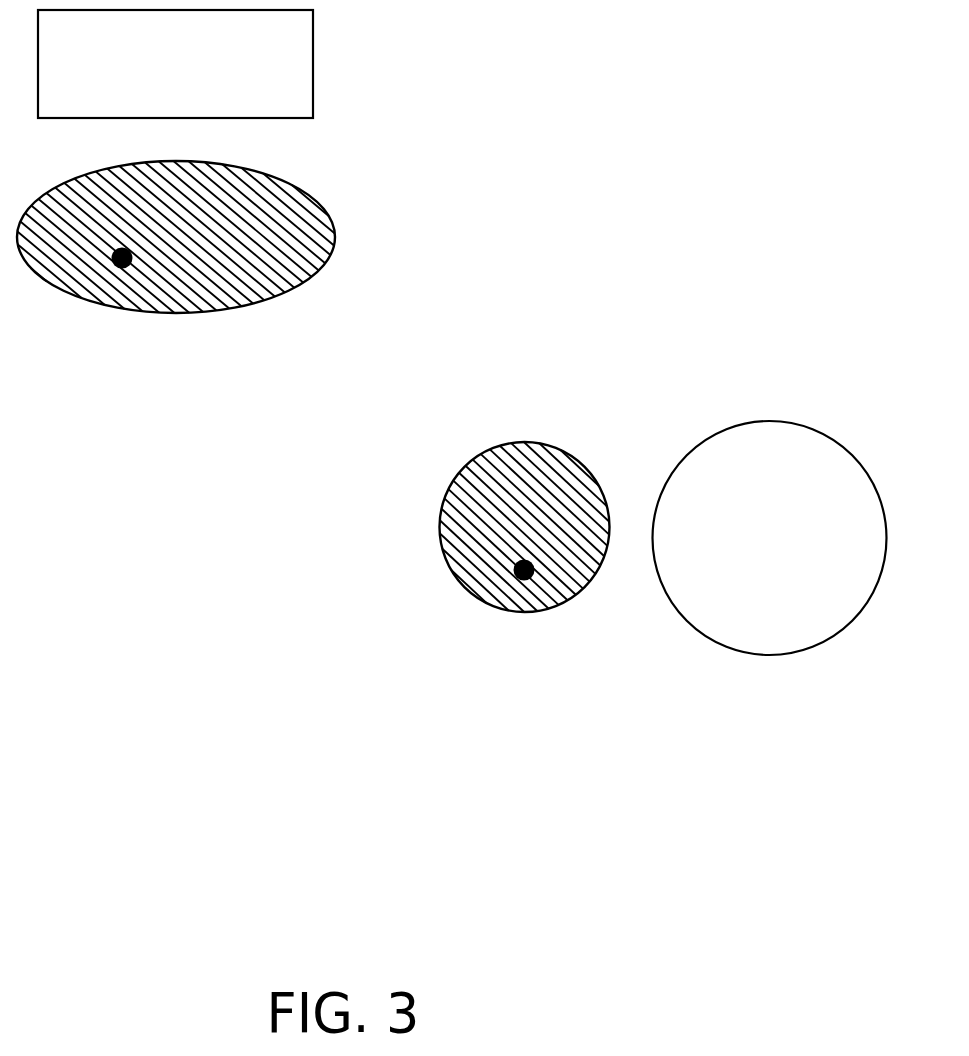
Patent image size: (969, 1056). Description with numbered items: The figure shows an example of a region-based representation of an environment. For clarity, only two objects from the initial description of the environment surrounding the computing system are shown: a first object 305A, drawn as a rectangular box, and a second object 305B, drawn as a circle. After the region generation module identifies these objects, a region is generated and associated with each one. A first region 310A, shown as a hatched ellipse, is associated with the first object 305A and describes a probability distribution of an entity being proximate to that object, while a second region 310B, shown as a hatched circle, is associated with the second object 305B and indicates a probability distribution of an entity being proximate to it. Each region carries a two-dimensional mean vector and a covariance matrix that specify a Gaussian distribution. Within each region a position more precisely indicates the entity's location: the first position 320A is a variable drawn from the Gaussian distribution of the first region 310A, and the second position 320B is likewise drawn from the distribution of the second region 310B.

The first object 305A is at (175, 64).
The second object 305B is at (770, 538).
The first region 310A is at (335, 237).
The second region 310B is at (523, 441).
The first position 320A is at (123, 272).
The second position 320B is at (524, 583).